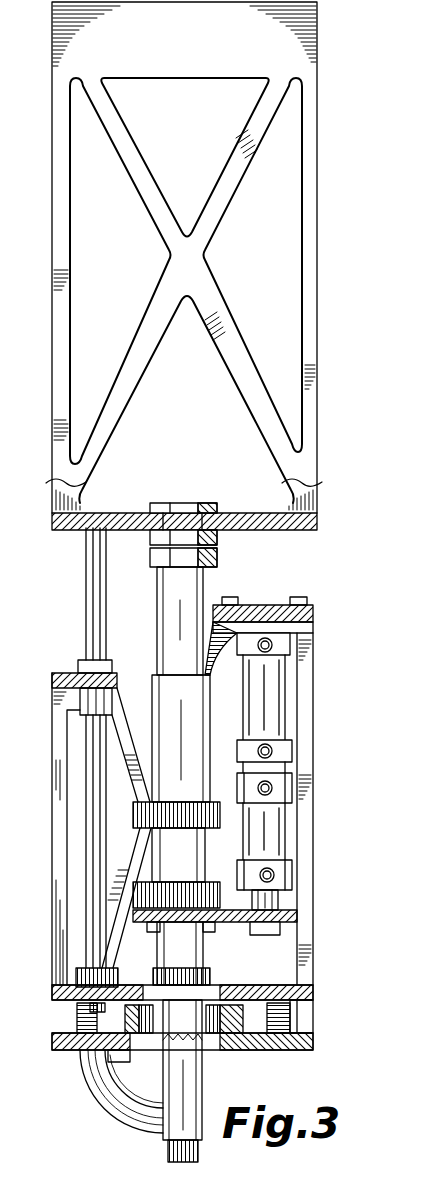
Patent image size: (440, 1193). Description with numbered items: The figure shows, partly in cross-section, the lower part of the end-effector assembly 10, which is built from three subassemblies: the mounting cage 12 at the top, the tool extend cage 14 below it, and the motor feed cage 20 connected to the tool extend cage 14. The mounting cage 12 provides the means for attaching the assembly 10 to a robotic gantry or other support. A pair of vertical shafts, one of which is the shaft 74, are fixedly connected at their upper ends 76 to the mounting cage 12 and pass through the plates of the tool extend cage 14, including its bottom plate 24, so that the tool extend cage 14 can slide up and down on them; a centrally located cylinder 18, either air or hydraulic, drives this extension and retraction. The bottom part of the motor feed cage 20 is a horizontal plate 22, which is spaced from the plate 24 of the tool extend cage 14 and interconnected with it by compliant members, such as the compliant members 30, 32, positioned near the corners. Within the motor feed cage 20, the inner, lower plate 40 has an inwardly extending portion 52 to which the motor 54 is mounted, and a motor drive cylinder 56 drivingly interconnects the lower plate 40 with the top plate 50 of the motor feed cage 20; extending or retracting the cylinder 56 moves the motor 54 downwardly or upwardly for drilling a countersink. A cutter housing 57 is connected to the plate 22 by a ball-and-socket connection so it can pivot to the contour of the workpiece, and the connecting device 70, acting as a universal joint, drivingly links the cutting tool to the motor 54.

The end-effector assembly 10 is at (325, 190).
The mounting cage 12 is at (325, 327).
The tool extend cage 14 is at (50, 845).
The cylinder 18 is at (165, 595).
The motor feed cage 20 is at (320, 785).
The horizontal plate 22 is at (255, 1050).
The plate 24 is at (254, 985).
The compliant member 30 is at (290, 1018).
The compliant member 32 is at (76, 1020).
The inner, lower plate 40 is at (290, 908).
The top plate 50 is at (262, 605).
The inwardly extending portion 52 is at (200, 945).
The motor 54 is at (197, 852).
The motor drive cylinder 56 is at (272, 710).
The cutter housing 57 is at (204, 1092).
The connecting device 70 is at (152, 952).
The vertical shaft 74 is at (93, 637).
The upper ends 76 is at (82, 530).